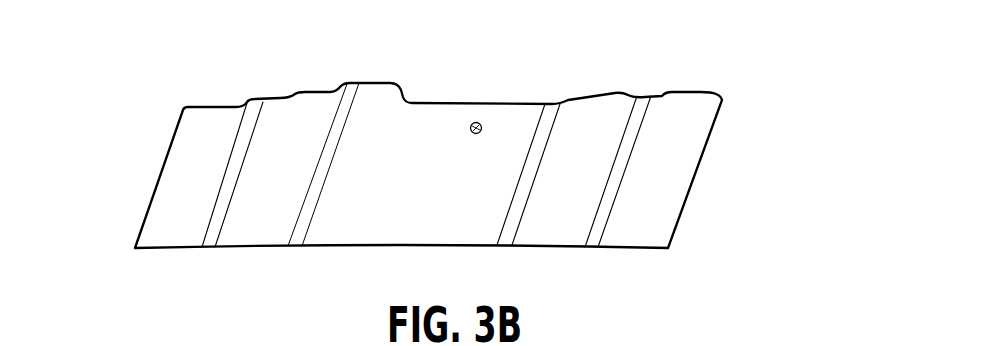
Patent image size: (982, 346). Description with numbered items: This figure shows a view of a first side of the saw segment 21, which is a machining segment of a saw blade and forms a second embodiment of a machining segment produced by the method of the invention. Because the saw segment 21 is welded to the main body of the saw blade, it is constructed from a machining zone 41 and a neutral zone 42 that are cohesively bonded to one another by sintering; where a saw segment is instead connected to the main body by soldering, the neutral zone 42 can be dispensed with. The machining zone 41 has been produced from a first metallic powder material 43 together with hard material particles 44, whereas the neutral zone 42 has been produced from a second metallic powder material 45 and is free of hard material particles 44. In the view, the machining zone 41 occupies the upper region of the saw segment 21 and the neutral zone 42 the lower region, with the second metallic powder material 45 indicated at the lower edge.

The saw segment 21 is at (140, 161).
The machining zone 41 is at (778, 132).
The neutral zone 42 is at (778, 250).
The first metallic powder material 43 is at (212, 130).
The hard material particles 44 is at (476, 122).
The second metallic powder material 45 is at (168, 233).